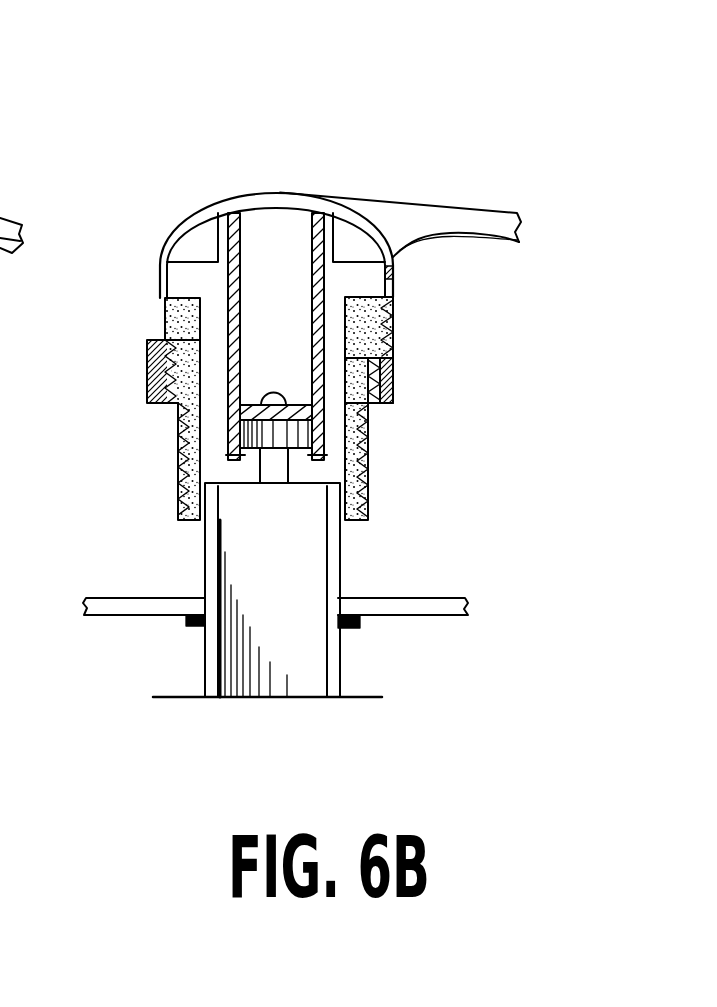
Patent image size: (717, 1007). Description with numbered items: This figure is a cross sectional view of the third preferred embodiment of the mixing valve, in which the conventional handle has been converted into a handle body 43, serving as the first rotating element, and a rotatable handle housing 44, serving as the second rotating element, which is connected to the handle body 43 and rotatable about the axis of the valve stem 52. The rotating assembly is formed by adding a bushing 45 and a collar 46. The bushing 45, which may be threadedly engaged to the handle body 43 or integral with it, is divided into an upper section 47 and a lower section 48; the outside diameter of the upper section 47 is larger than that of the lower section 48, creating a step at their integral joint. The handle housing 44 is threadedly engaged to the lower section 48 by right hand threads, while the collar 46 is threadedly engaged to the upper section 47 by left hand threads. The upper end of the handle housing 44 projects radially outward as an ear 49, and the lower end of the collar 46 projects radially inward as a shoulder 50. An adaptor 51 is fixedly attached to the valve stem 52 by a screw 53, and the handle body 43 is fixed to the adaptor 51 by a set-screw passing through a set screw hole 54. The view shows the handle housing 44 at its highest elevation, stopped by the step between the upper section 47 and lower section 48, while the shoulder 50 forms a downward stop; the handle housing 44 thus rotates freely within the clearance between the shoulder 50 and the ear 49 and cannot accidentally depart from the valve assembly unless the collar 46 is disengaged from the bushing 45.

The handle body 43 is at (208, 208).
The rotatable handle housing 44 is at (368, 433).
The bushing 45 is at (357, 358).
The collar 46 is at (393, 375).
The upper section 47 is at (386, 316).
The lower section 48 is at (357, 476).
The ear 49 is at (182, 377).
The shoulder 50 is at (370, 403).
The adaptor 51 is at (322, 355).
The valve stem 52 is at (287, 448).
The screw 53 is at (274, 397).
The set screw hole 54 is at (393, 277).